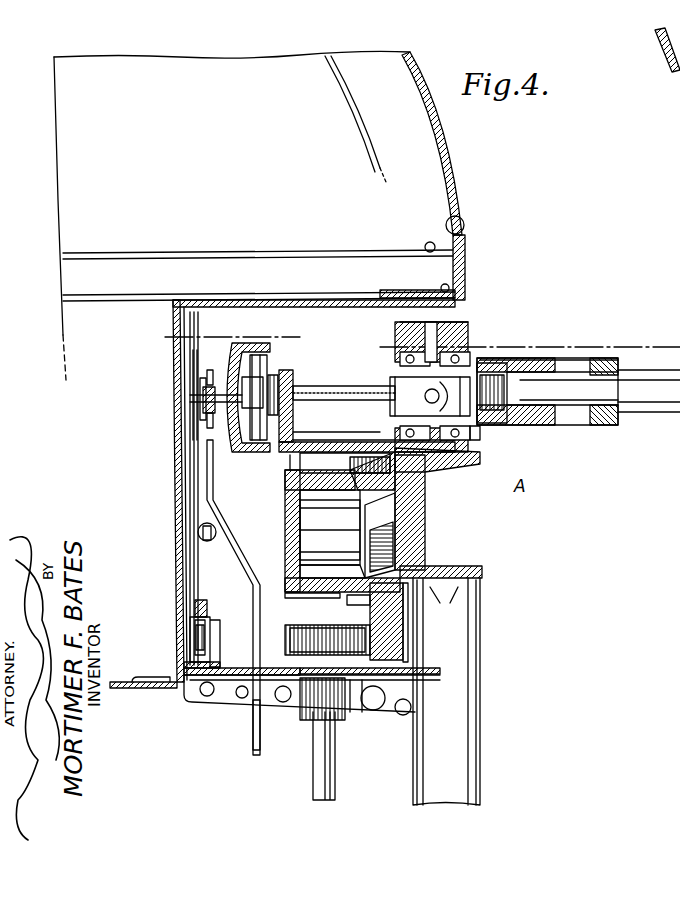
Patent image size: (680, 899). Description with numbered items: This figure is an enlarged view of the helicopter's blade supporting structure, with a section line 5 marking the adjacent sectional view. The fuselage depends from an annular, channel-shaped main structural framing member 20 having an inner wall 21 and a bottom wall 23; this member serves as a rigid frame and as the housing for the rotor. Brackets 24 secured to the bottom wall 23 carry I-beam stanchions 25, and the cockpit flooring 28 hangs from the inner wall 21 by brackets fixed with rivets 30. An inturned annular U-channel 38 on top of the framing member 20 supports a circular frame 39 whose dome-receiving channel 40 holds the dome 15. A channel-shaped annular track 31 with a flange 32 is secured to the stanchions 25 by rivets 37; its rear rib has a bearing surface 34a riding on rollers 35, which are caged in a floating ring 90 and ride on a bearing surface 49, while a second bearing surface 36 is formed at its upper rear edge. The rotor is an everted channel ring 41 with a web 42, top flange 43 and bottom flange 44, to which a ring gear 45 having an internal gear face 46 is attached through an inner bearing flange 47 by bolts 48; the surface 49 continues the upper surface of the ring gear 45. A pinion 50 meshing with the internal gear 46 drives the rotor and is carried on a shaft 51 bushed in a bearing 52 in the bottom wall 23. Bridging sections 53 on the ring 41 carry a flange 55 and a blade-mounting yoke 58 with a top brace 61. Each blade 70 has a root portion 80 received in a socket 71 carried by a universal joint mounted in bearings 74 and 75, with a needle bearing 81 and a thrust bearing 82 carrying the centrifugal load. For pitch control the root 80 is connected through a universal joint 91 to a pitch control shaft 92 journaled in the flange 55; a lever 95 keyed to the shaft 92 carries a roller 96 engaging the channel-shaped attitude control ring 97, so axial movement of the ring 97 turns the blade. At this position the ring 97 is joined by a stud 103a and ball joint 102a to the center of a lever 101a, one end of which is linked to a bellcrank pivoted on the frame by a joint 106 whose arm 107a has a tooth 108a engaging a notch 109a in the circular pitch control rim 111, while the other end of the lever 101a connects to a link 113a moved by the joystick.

The section line 5- 5 is at (160, 338).
The dome 15 is at (462, 174).
The main structural framing member 20 is at (186, 464).
The inner wall 21 is at (178, 548).
The bottom wall 23 is at (205, 698).
The brackets 24 is at (372, 718).
The stanchions 25 is at (482, 722).
The flooring 28 is at (172, 364).
The rivets 30 is at (152, 690).
The channel-shaped member 31 is at (426, 525).
The flange 32 is at (450, 458).
The bearing surface 34a is at (428, 498).
The rollers 35 is at (428, 542).
The second bearing surface 36 is at (455, 470).
The rivets 37 is at (443, 600).
The inturned annular U-channel 38 is at (466, 268).
The circular frame 39 is at (468, 240).
The dome-receiving channel 40 is at (448, 222).
The rotor ring 41 is at (370, 514).
The web 42 is at (300, 540).
The top flange 43 is at (295, 528).
The bottom flange 44 is at (316, 590).
The ring gear 45 is at (398, 648).
The internal gear face 46 is at (385, 620).
The inner bearing flange 47 is at (295, 578).
The bolts 48 is at (350, 606).
The second bearing surface 49 is at (430, 560).
The pinion 50 is at (300, 632).
The shaft 51 is at (316, 780).
The bearing 52 is at (352, 436).
The bridging section 53 is at (318, 436).
The flange 55 is at (300, 380).
The blade-mounting support 58 is at (479, 318).
The top wall 61 is at (455, 322).
The blade 70 is at (679, 428).
The blade socket 71 is at (540, 358).
The bearing 74 is at (400, 340).
The bearing 75 is at (478, 436).
The root portion 80 is at (575, 400).
The needle bearing 81 is at (598, 360).
The thrust bearing 82 is at (510, 430).
The floating ring 90 is at (330, 525).
The universal joint 91 is at (402, 377).
The pitch control shaft 92 is at (325, 386).
The lever 95 is at (284, 372).
The roller 96 is at (283, 462).
The attitude control ring 97 is at (256, 352).
The lever 101a is at (190, 366).
The ball joint 102a is at (190, 398).
The stud 103a is at (226, 372).
The joint 106 is at (200, 382).
The arm 107a is at (196, 512).
The tooth 108a is at (180, 598).
The notch 109a is at (205, 585).
The pitch control rim 111 is at (210, 602).
The link 113a is at (252, 730).